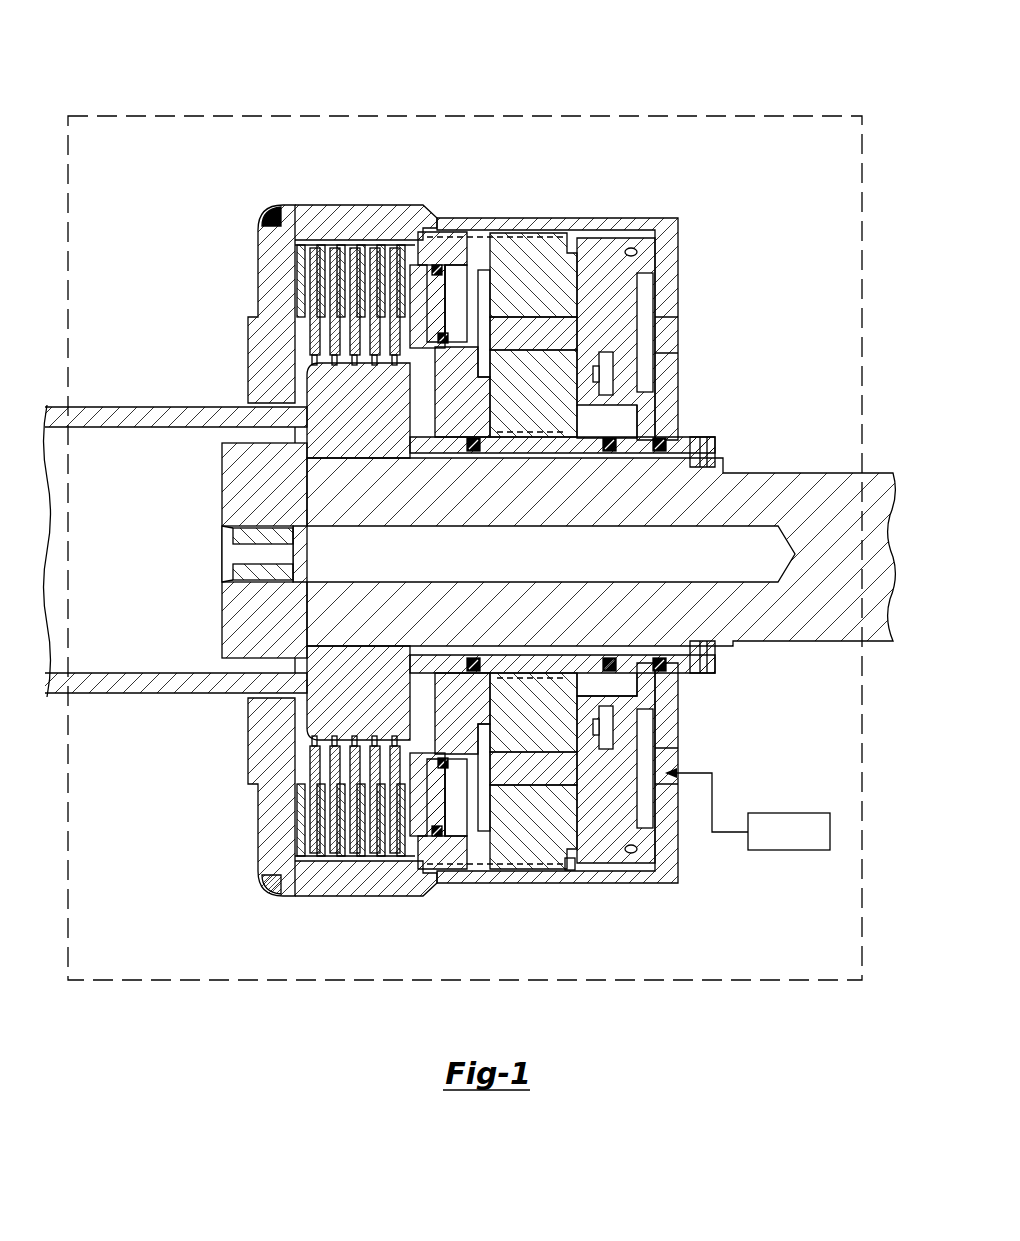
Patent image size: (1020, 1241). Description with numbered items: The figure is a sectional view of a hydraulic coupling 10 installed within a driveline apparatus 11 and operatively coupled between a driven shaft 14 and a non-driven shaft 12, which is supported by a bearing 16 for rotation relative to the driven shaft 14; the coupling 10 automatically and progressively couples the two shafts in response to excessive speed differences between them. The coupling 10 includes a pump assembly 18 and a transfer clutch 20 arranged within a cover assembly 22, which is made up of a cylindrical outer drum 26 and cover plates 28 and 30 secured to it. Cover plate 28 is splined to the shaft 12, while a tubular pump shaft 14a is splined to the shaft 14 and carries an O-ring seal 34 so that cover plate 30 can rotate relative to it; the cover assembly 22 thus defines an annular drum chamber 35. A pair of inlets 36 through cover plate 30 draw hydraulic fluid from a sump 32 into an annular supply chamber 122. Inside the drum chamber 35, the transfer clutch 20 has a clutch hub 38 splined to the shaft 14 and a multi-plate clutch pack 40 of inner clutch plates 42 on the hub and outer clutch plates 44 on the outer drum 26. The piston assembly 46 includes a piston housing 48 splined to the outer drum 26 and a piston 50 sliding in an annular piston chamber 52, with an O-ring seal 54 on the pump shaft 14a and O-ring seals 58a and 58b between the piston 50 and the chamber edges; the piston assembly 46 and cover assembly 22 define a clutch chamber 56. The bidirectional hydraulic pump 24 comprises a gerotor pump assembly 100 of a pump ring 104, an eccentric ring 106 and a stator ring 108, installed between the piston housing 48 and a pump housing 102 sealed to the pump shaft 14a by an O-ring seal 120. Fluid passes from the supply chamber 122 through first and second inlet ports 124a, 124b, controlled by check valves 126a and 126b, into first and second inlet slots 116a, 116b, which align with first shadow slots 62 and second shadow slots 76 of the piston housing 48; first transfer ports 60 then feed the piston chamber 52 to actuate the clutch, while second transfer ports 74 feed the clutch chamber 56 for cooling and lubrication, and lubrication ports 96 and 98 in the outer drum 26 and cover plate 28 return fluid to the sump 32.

The hydraulic coupling 10 is at (263, 206).
The driveline apparatus 11 is at (628, 115).
The non-driven shaft 12 is at (128, 695).
The driven shaft 14 is at (763, 497).
The pump shaft 14a is at (692, 440).
The bearing 16 is at (243, 430).
The pump assembly 18 is at (480, 852).
The transfer clutch 20 is at (330, 763).
The cover assembly 22 is at (413, 206).
The bidirectional hydraulic pump 24 is at (567, 876).
The outer drum 26 is at (420, 896).
The cover plate 28 is at (273, 285).
The cover plate 30 is at (672, 292).
The sump 32 is at (790, 852).
The O-ring seal 34 is at (662, 665).
The drum chamber 35 is at (334, 252).
The inlets 36 is at (668, 330).
The clutch hub 38 is at (357, 410).
The multi-plate clutch pack 40 is at (351, 777).
The inner clutch plates 42 is at (352, 335).
The outer clutch plates 44 is at (312, 248).
The piston assembly 46 is at (457, 255).
The piston housing 48 is at (460, 407).
The piston 50 is at (380, 252).
The piston chamber 52 is at (455, 836).
The O-ring seal 54 is at (472, 658).
The clutch chamber 56 is at (423, 440).
The O-ring seal 58a is at (432, 834).
The O-ring seal 58b is at (437, 268).
The first transfer ports 60 is at (481, 300).
The first shadow slots 62 is at (481, 368).
The second transfer ports 74 is at (467, 713).
The second shadow slots 76 is at (535, 690).
The lubrication port 96 is at (363, 896).
The lubrication port 98 is at (270, 720).
The gerotor pump assembly 100 is at (547, 258).
The pump housing 102 is at (630, 260).
The pump ring 104 is at (658, 660).
The eccentric ring 106 is at (518, 247).
The stator ring 108 is at (537, 770).
The first inlet slots 116a is at (609, 350).
The second inlet slots 116b is at (614, 750).
The O-ring seal 120 is at (612, 447).
The supply chamber 122 is at (640, 823).
The first inlet ports 124a is at (645, 375).
The second inlet ports 124b is at (645, 730).
The first check valve 126a is at (638, 252).
The second check valve 126b is at (596, 752).